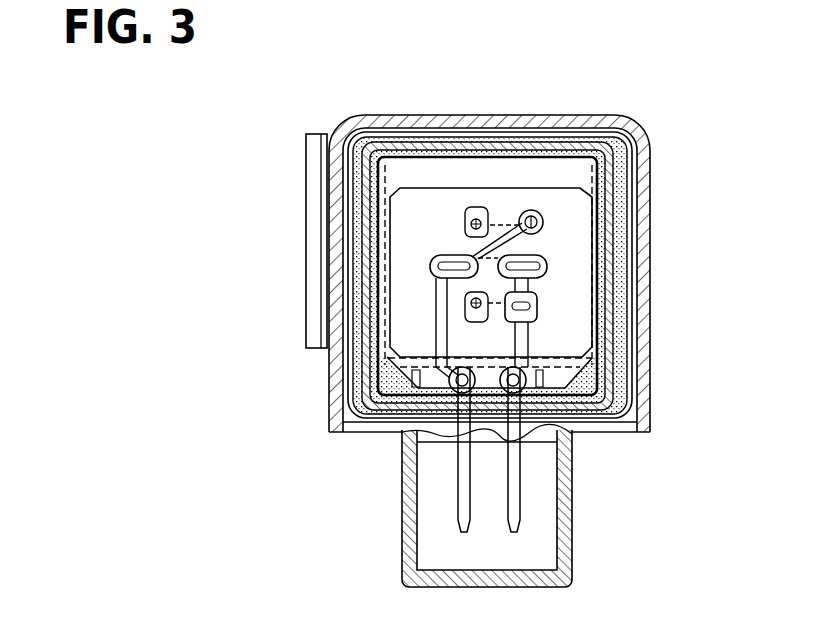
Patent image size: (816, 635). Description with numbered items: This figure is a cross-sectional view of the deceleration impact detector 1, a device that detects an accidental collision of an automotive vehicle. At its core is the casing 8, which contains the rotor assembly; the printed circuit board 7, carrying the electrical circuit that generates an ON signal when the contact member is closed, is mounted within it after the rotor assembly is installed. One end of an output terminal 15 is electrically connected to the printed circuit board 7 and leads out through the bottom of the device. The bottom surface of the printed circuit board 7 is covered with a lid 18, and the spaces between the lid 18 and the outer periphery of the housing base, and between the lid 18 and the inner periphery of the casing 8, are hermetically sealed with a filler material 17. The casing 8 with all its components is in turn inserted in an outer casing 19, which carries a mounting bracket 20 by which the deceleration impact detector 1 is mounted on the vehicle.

The deceleration impact detector 1 is at (608, 102).
The printed circuit board 7 is at (536, 212).
The casing 8 is at (620, 288).
The output terminal 15 is at (515, 500).
The filler material 17 is at (397, 397).
The lid 18 is at (610, 240).
The outer casing 19 is at (645, 162).
The mounting bracket 20 is at (313, 187).